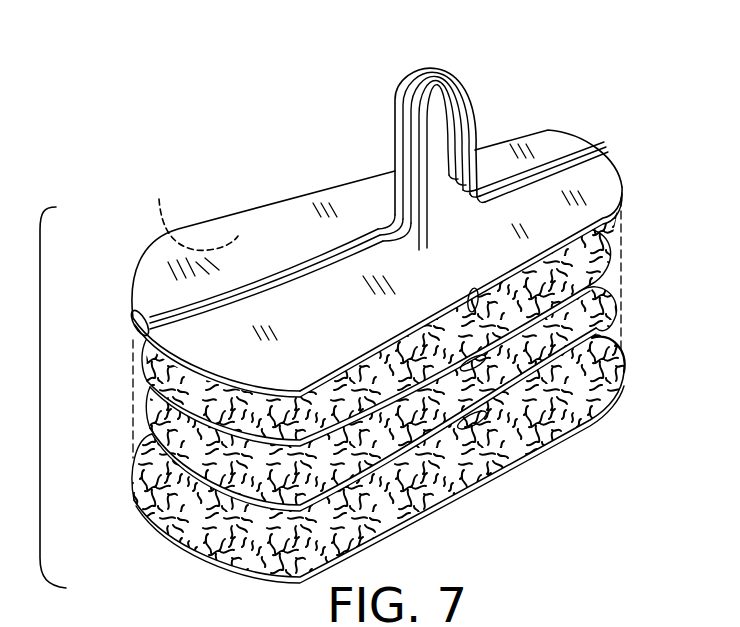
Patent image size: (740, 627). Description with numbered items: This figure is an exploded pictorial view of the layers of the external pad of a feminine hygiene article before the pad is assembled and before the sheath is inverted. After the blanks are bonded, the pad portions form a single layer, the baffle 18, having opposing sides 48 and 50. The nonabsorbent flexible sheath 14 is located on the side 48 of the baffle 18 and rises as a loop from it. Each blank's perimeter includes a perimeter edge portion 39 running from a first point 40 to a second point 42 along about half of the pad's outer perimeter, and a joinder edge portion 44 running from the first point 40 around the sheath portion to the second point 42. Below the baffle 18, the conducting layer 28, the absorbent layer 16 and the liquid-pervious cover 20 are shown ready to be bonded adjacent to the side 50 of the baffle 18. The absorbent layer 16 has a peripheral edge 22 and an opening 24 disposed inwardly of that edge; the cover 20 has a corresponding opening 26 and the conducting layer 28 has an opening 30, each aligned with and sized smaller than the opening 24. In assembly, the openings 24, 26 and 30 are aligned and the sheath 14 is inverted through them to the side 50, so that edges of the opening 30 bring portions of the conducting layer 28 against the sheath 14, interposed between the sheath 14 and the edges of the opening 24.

The sheath 14 is at (440, 113).
The absorbent layer 16 is at (582, 311).
The baffle 18 is at (540, 138).
The cover 20 is at (623, 380).
The peripheral edge 22 is at (620, 352).
The opening 24 is at (487, 365).
The opening 26 is at (507, 420).
The conducting layer 28 is at (610, 249).
The opening 30 is at (480, 300).
The perimeter edge portion 39 is at (615, 217).
The first point 40 is at (133, 303).
The second point 42 is at (605, 143).
The joinder edge portion 44 is at (396, 106).
The side 48 is at (287, 221).
The side 50 is at (189, 210).